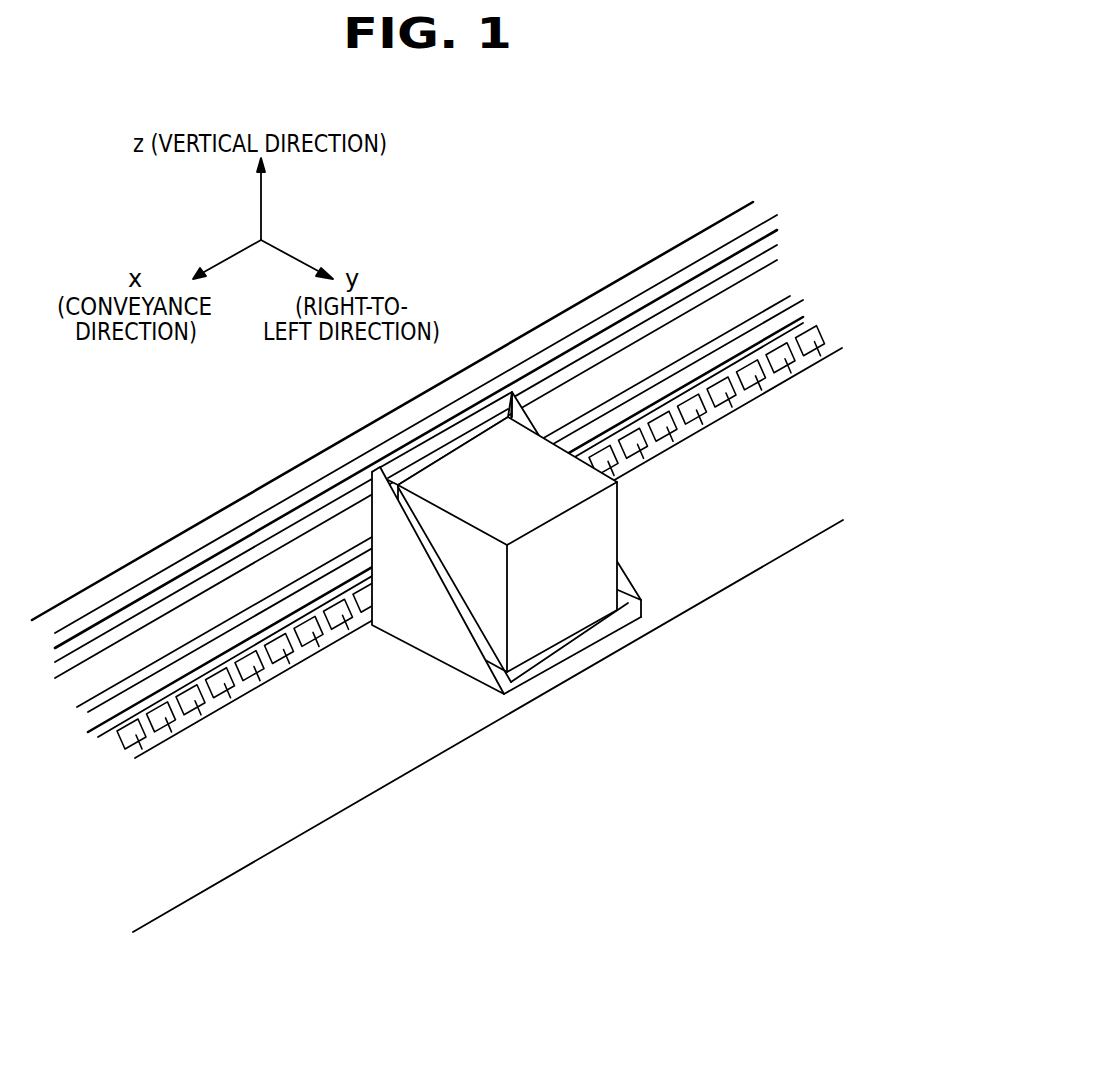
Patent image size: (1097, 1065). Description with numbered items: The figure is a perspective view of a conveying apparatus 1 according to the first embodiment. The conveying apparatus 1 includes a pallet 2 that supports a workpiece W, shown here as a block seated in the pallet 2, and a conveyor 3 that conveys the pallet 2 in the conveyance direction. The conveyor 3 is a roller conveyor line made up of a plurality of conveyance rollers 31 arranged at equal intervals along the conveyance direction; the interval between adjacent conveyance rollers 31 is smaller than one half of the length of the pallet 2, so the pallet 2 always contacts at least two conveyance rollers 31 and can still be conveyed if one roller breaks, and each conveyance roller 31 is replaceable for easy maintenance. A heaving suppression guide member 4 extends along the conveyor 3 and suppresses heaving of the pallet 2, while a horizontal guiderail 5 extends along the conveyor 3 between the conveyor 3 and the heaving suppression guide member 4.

The conveying apparatus 1 is at (517, 281).
The pallet 2 is at (427, 654).
The conveyor 3 is at (250, 721).
The conveyance roller 31 is at (307, 640).
The heaving suppression guide member 4 is at (195, 524).
The horizontal guiderail 5 is at (208, 630).
The workpiece W is at (617, 517).